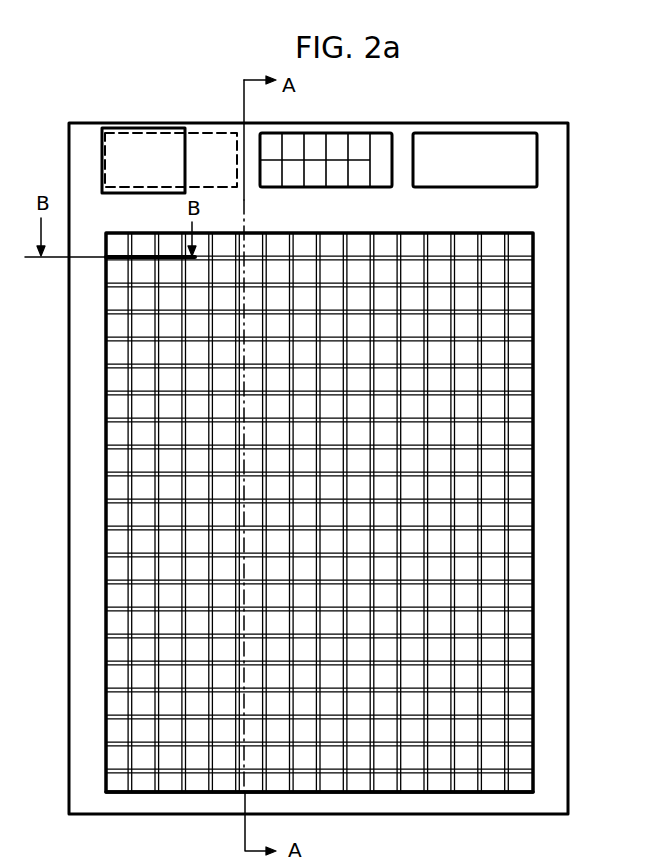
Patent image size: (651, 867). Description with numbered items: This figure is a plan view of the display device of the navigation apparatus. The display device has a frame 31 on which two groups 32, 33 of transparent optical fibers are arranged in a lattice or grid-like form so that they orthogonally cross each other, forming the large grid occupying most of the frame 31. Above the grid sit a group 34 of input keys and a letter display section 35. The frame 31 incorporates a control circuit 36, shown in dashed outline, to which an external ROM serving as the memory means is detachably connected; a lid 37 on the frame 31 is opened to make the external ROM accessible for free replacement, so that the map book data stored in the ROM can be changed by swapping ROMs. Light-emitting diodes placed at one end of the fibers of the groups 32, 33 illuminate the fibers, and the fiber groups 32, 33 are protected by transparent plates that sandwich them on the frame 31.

The frame 31 is at (552, 348).
The group of transparent optical fibers 32 is at (105, 403).
The group of transparent optical fibers 33 is at (153, 785).
The group of input keys 34 is at (355, 140).
The letter display section 35 is at (520, 160).
The control circuit 36 is at (171, 134).
The lid 37 is at (140, 140).